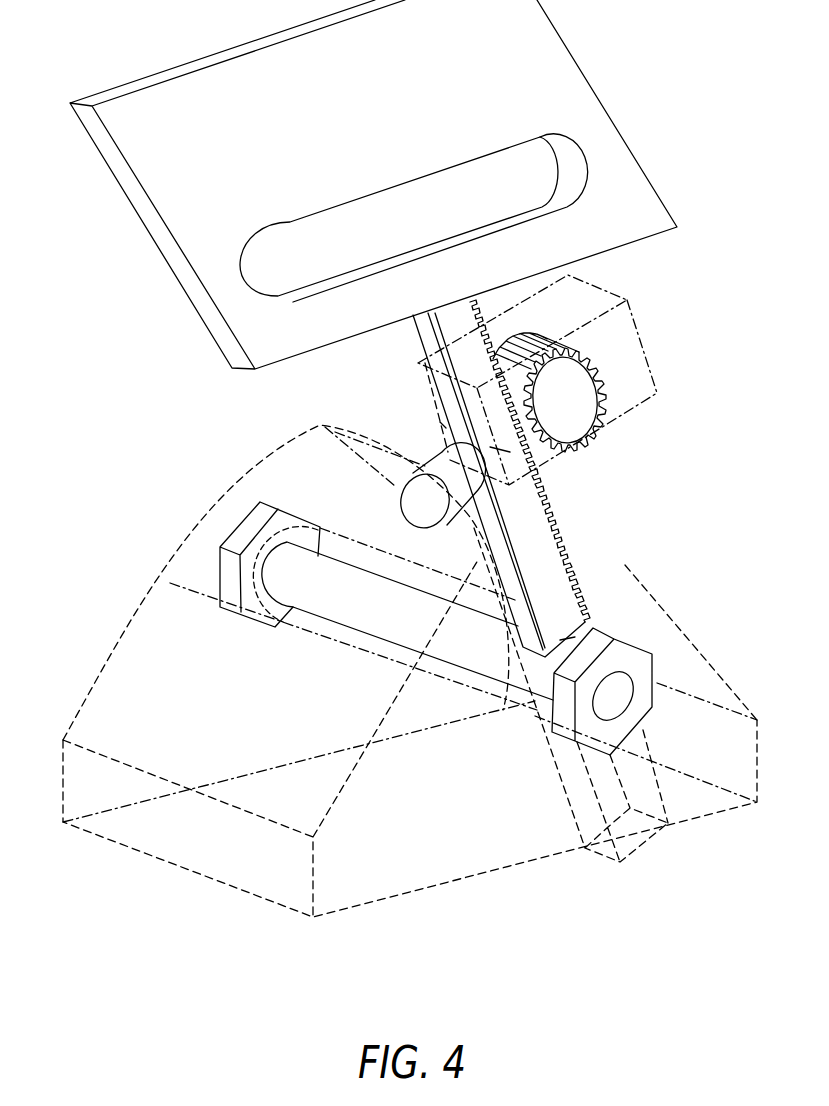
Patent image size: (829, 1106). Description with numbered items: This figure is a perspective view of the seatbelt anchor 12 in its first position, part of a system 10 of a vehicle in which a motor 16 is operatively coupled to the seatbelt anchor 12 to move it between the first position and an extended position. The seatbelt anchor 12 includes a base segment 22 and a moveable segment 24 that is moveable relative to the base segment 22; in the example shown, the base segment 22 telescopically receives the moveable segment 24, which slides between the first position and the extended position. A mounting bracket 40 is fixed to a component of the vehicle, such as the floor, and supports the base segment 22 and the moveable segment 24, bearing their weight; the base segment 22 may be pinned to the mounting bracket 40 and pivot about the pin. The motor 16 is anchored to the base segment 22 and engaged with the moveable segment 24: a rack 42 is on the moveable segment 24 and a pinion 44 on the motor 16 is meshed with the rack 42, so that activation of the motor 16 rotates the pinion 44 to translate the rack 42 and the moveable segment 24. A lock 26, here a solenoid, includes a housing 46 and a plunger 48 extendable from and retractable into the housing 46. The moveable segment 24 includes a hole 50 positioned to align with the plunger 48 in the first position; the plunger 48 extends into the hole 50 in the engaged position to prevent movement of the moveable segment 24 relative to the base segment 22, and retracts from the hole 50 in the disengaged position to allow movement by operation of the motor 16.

The system 10 is at (528, 795).
The seatbelt anchor 12 is at (518, 717).
The motor 16 is at (497, 340).
The base segment 22 is at (640, 850).
The moveable segment 24 is at (413, 333).
The lock 26 is at (417, 490).
The mounting bracket 40 is at (150, 853).
The rack 42 is at (578, 583).
The pinion 44 is at (573, 387).
The housing 46 is at (413, 520).
The plunger 48 is at (457, 440).
The hole 50 is at (497, 448).